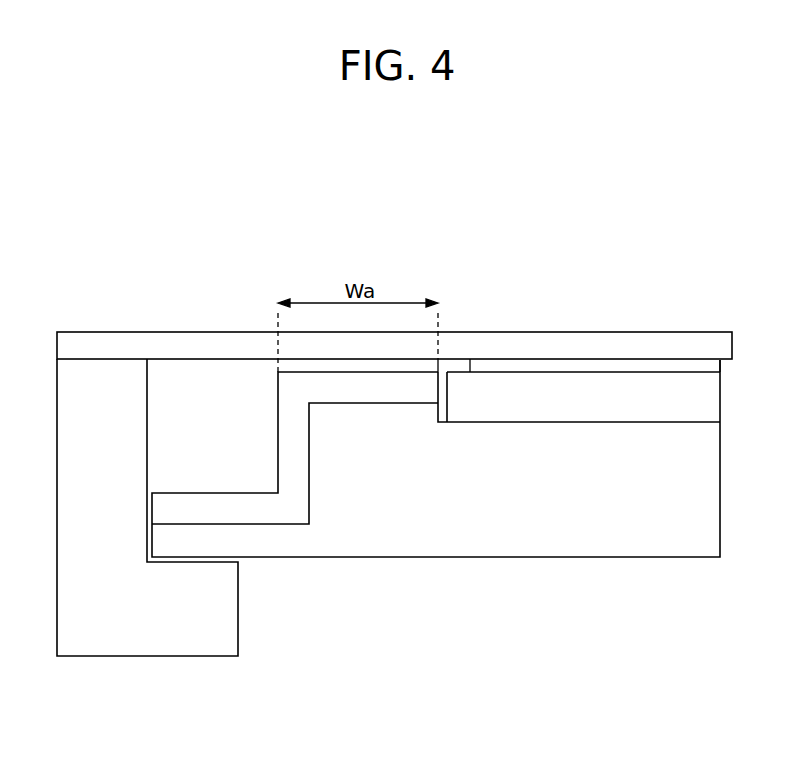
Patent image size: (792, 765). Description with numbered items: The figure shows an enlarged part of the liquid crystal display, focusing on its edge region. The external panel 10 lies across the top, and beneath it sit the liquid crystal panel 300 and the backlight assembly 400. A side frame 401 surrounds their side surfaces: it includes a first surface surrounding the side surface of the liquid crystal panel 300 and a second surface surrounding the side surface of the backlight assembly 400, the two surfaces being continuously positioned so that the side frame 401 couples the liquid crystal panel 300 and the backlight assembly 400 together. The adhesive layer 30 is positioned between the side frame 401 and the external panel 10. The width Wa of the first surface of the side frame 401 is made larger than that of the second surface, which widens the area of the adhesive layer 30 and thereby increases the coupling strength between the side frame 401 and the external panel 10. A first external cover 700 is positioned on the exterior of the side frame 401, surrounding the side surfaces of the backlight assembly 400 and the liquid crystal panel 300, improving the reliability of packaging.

The external panel 10 is at (670, 340).
The adhesive layer 30 is at (707, 365).
The liquid crystal panel 300 is at (706, 400).
The backlight assembly 400 is at (706, 494).
The side frame 401 is at (408, 388).
The first external cover 700 is at (120, 633).